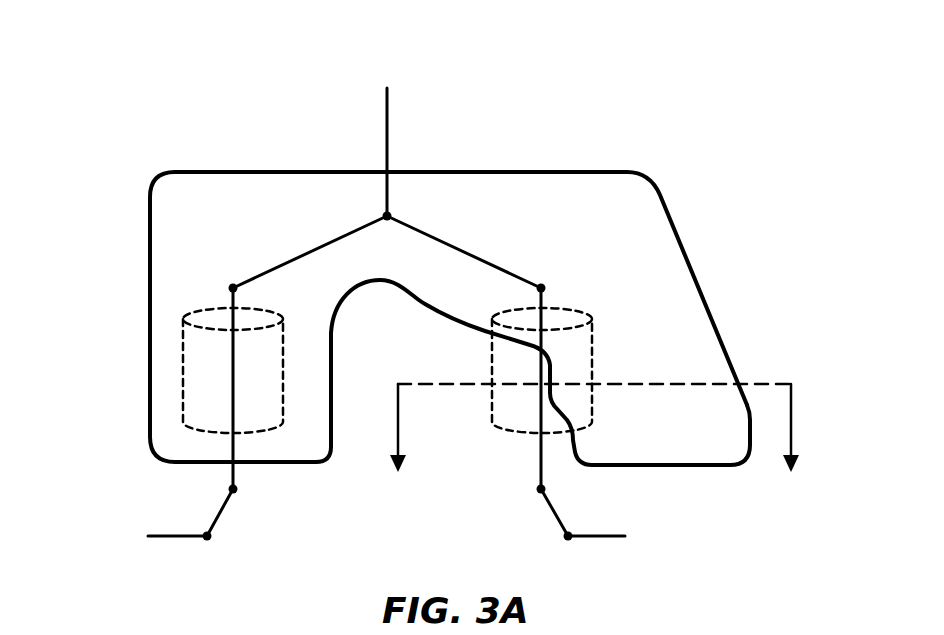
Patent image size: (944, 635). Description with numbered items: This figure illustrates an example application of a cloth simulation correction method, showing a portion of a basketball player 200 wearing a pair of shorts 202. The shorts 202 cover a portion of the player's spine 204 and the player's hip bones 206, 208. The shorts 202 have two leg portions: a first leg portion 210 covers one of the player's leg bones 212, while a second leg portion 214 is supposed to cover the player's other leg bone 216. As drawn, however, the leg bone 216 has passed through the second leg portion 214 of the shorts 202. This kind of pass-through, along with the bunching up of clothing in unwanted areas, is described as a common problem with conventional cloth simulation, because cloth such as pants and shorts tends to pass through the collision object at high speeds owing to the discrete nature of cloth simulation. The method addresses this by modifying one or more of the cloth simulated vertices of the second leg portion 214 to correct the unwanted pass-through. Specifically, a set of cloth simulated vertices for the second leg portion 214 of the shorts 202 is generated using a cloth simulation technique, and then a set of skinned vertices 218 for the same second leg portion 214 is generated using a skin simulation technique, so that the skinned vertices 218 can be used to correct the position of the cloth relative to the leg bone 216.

The basketball player 200 is at (538, 112).
The pair of shorts 202 is at (587, 169).
The spine 204 is at (390, 192).
The hip bone 206 is at (310, 253).
The hip bone 208 is at (466, 254).
The first leg portion 210 is at (268, 170).
The leg bone 212 is at (232, 380).
The second leg portion 214 is at (702, 285).
The leg bone 216 is at (540, 457).
The skinned vertices 218 is at (593, 357).